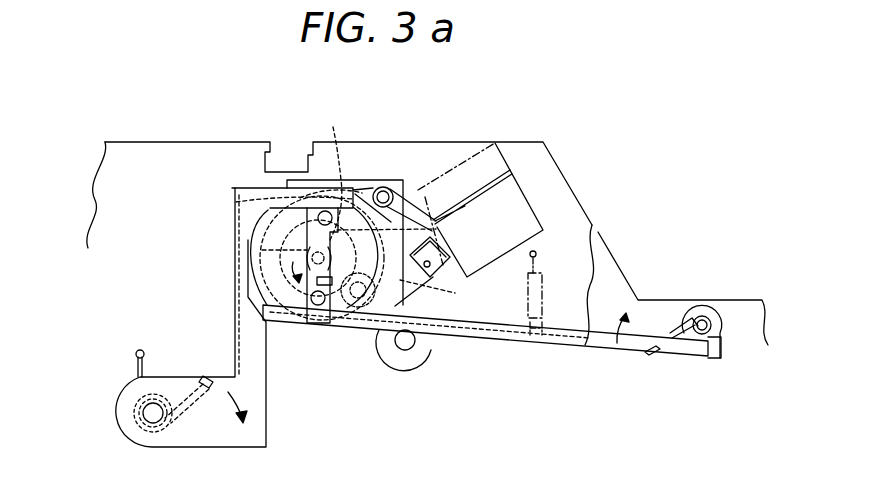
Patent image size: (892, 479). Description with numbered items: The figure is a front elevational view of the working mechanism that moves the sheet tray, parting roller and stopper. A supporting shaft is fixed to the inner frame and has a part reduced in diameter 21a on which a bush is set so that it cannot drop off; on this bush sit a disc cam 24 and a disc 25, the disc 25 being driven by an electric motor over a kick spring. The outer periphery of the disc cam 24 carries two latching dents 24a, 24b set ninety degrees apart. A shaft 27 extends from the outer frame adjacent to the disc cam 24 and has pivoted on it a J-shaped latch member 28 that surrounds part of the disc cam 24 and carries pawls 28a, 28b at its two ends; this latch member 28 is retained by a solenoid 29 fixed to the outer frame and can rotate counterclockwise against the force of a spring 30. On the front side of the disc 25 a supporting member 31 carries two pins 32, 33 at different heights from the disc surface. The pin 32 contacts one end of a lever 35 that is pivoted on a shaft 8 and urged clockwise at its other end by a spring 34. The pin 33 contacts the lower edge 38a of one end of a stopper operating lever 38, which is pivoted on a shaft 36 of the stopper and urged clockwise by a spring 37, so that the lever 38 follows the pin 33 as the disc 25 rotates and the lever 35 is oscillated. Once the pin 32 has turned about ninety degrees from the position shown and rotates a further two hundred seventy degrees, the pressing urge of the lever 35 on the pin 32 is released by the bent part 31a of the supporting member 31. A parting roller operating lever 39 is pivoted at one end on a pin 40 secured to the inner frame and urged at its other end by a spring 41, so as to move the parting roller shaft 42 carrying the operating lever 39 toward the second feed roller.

The shaft 8 is at (722, 327).
The reduced-diameter part of supporting shaft 21a is at (305, 252).
The disc cam 24 is at (436, 230).
The latching dent 24a is at (313, 320).
The latching dent 24b is at (262, 268).
The disc 25 is at (404, 197).
The shaft 27 is at (396, 185).
The latch member 28 is at (408, 286).
The pawl 28a is at (380, 340).
The pawl 28b is at (240, 204).
The solenoid 29 is at (521, 213).
The spring 30 is at (364, 192).
The supporting member 31 is at (412, 252).
The bent part 31a is at (316, 282).
The pin 32 is at (312, 326).
The pin 33 is at (321, 208).
The spring 34 is at (676, 330).
The lever 35 is at (632, 344).
The shaft 36 is at (142, 411).
The spring 37 is at (209, 376).
The stopper operating lever 38 is at (268, 411).
The lower edge 38a is at (326, 171).
The parting roller operating lever 39 is at (388, 346).
The pin 40 is at (438, 293).
The spring 41 is at (544, 302).
The parting roller shaft 42 is at (408, 346).